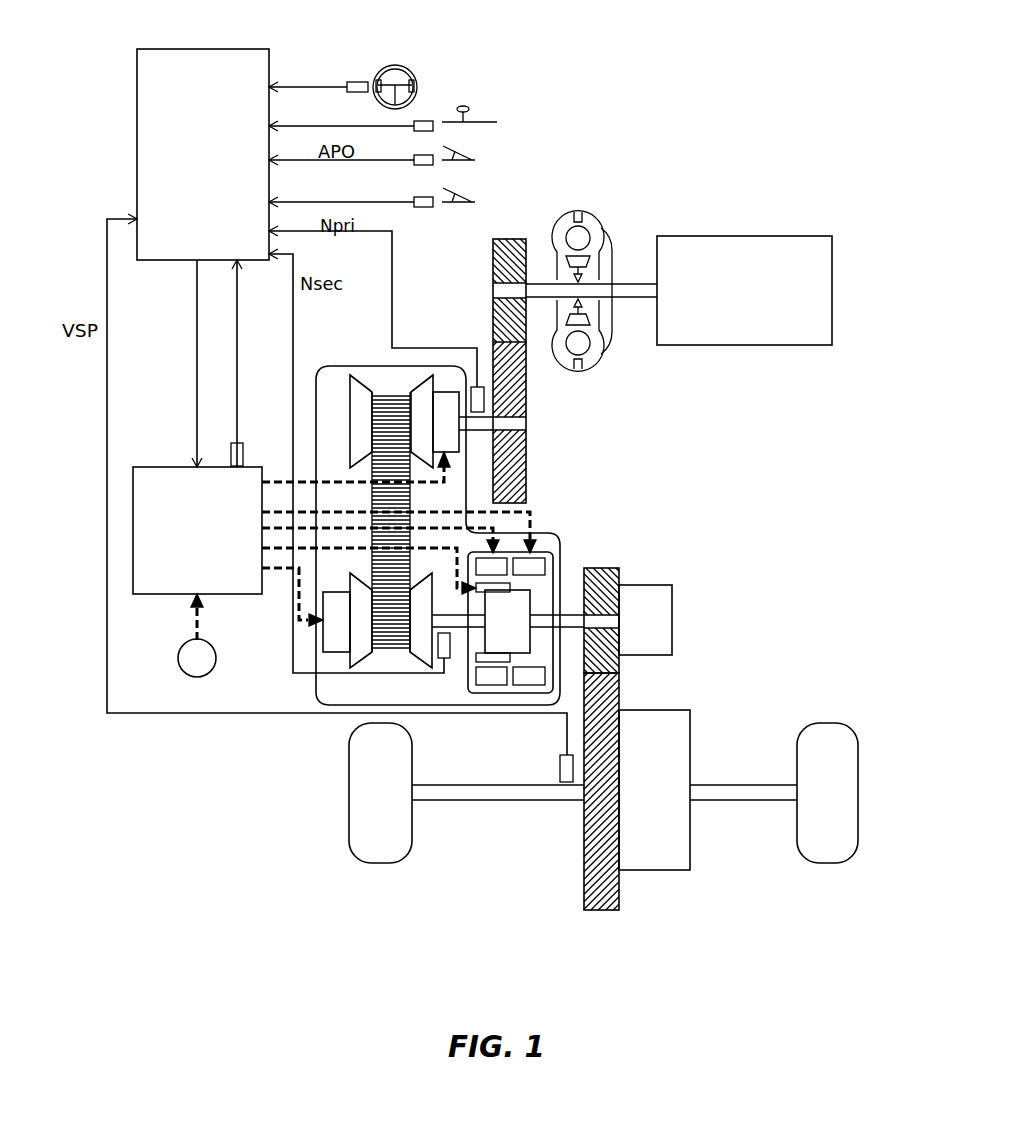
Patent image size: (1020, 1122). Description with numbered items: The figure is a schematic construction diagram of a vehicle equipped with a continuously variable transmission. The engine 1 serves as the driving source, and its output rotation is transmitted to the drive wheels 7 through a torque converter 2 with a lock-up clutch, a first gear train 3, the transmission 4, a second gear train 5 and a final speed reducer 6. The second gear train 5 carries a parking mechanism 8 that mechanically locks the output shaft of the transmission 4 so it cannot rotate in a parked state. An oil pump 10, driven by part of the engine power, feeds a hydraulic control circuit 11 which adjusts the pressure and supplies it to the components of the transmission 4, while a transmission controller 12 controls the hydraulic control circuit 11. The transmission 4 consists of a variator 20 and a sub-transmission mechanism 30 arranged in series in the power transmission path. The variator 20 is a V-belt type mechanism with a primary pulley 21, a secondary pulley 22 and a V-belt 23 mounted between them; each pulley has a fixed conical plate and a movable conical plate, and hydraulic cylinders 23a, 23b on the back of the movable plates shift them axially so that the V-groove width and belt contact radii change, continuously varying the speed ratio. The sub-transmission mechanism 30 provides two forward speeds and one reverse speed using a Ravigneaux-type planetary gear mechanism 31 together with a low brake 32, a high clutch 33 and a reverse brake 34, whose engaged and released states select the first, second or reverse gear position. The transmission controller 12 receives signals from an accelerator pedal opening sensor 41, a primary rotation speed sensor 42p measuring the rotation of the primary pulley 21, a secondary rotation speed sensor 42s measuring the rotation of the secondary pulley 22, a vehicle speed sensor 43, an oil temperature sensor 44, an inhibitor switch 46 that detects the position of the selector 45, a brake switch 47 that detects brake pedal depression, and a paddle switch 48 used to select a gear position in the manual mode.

The engine 1 is at (820, 248).
The torque converter 2 is at (610, 233).
The first gear train 3 is at (517, 224).
The transmission 4 is at (363, 366).
The second gear train 5 is at (607, 926).
The final speed reducer 6 is at (655, 862).
The drive wheels 7 is at (380, 850).
The parking mechanism 8 is at (658, 610).
The oil pump 10 is at (179, 645).
The hydraulic control circuit 11 is at (153, 472).
The transmission controller 12 is at (258, 51).
The variator 20 is at (335, 387).
The primary pulley 21 is at (363, 422).
The secondary pulley 22 is at (362, 637).
The V-belt 23 is at (393, 392).
The hydraulic cylinder 23a is at (445, 392).
The hydraulic cylinder 23b is at (332, 627).
The sub-transmission mechanism 30 is at (563, 547).
The Ravigneaux-type planetary gear mechanism 31 is at (510, 617).
The low brake 32 is at (495, 567).
The high clutch 33 is at (492, 657).
The reverse brake 34 is at (527, 568).
The accelerator pedal opening sensor 41 is at (424, 162).
The primary rotation speed sensor 42p is at (477, 386).
The secondary rotation speed sensor 42s is at (442, 655).
The vehicle speed sensor 43 is at (559, 765).
The oil temperature sensor 44 is at (243, 452).
The selector 45 is at (465, 102).
The inhibitor switch 46 is at (427, 120).
The brake switch 47 is at (424, 205).
The paddle switch 48 is at (356, 80).